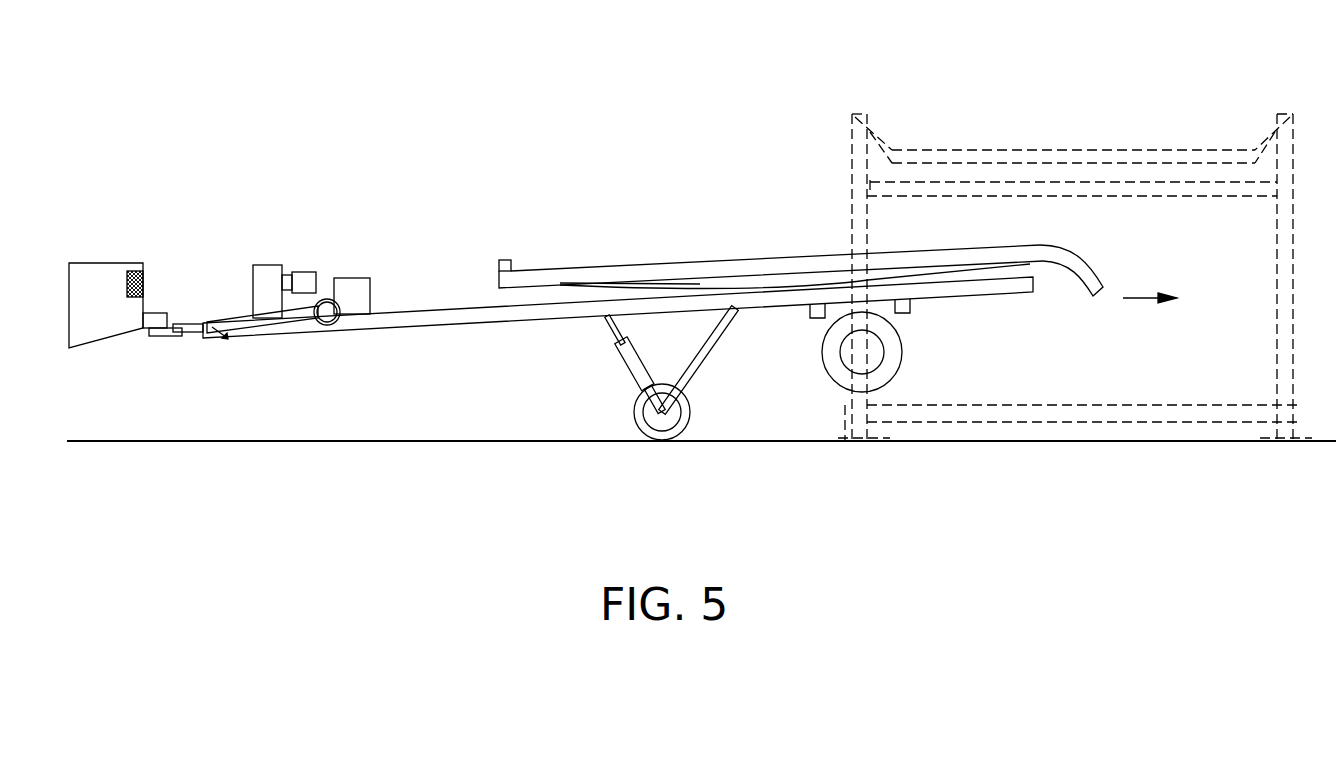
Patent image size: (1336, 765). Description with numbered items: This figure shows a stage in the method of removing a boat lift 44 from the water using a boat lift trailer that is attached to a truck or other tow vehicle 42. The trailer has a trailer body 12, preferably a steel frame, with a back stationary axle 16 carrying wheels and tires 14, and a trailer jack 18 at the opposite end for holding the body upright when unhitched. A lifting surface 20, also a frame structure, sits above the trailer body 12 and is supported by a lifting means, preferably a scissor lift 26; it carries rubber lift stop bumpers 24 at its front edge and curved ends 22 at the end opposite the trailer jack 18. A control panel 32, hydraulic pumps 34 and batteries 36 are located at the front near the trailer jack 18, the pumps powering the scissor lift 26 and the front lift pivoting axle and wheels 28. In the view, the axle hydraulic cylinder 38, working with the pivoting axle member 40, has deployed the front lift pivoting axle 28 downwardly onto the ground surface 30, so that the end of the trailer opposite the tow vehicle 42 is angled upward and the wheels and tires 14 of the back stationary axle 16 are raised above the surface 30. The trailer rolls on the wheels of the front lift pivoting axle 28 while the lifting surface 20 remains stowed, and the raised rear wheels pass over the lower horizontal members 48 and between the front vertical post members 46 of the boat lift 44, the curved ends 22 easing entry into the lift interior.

The trailer body 12 is at (438, 325).
The wheels and tires 14 is at (897, 358).
The back stationary axle 16 is at (842, 347).
The trailer jack 18 is at (249, 329).
The lifting surface 20 is at (552, 270).
The curved ends 22 is at (1080, 259).
The rubber lift stop bumpers 24 is at (505, 260).
The scissor lift 26 is at (657, 281).
The front lift pivoting axle assembly 28 is at (690, 424).
The ground surface 30 is at (324, 443).
The control panel 32 is at (268, 265).
The hydraulic pumps 34 is at (306, 272).
The batteries 36 is at (353, 278).
The axle hydraulic cylinder 38 is at (622, 349).
The pivoting axle member 40 is at (709, 355).
The tow vehicle 42 is at (104, 262).
The boat lift 44 is at (922, 78).
The front vertical post members 46 is at (852, 222).
The lower horizontal members 48 is at (855, 412).